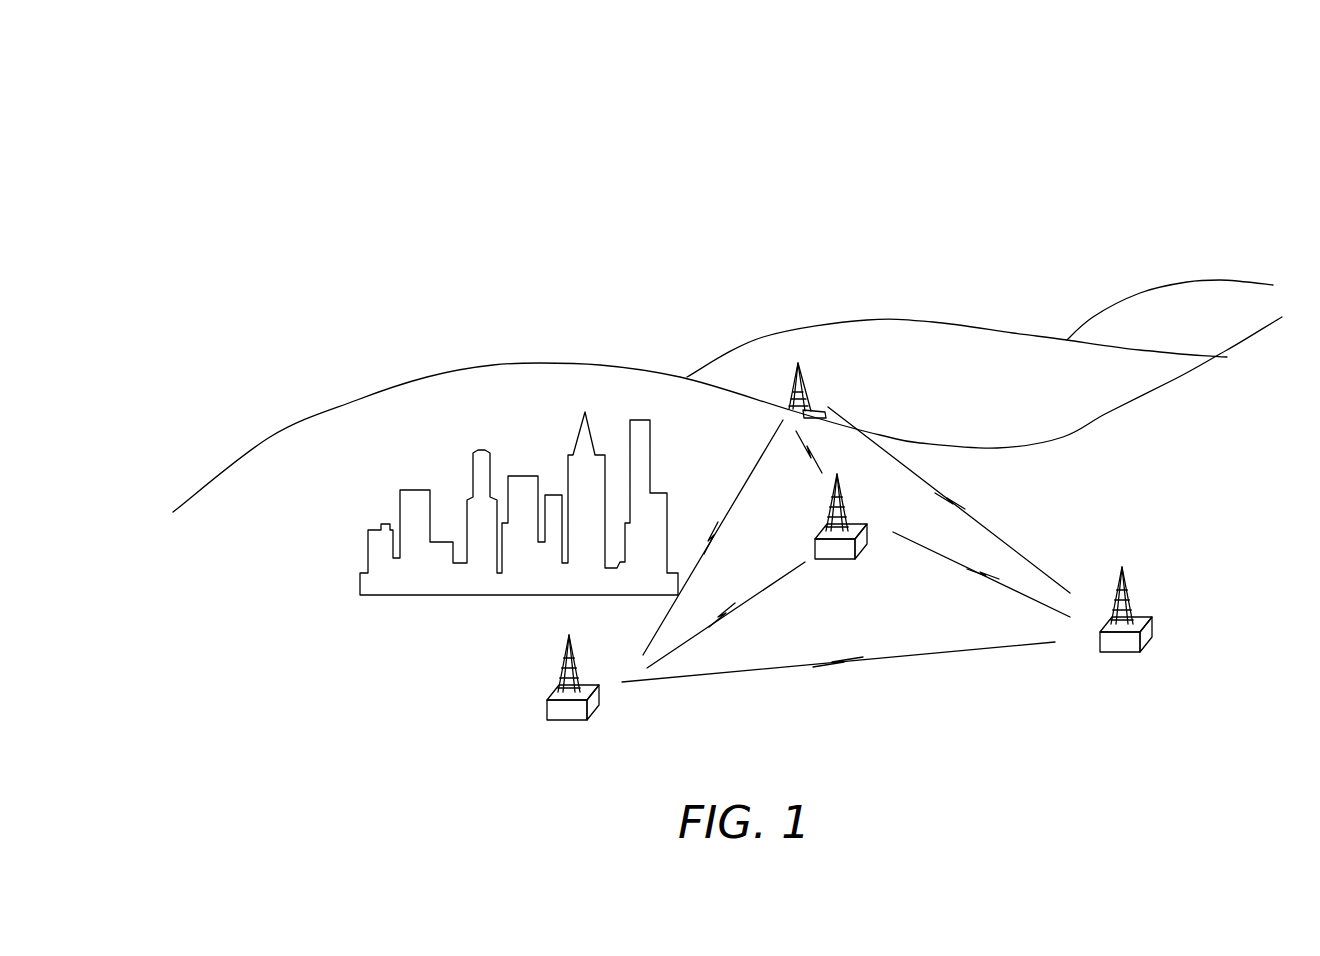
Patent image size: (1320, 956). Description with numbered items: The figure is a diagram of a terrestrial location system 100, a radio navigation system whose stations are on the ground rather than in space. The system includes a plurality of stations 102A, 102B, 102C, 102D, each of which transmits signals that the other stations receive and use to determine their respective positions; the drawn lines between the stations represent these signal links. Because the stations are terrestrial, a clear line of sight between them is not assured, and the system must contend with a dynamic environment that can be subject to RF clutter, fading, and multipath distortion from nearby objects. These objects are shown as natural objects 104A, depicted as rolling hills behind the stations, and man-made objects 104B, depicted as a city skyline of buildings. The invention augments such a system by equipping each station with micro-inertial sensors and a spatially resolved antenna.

The terrestrial location system 100 is at (1048, 156).
The station 102A is at (833, 561).
The station 102B is at (805, 388).
The station 102C is at (1127, 652).
The station 102D is at (573, 722).
The natural objects 104A is at (590, 365).
The man-made objects 104B is at (668, 533).